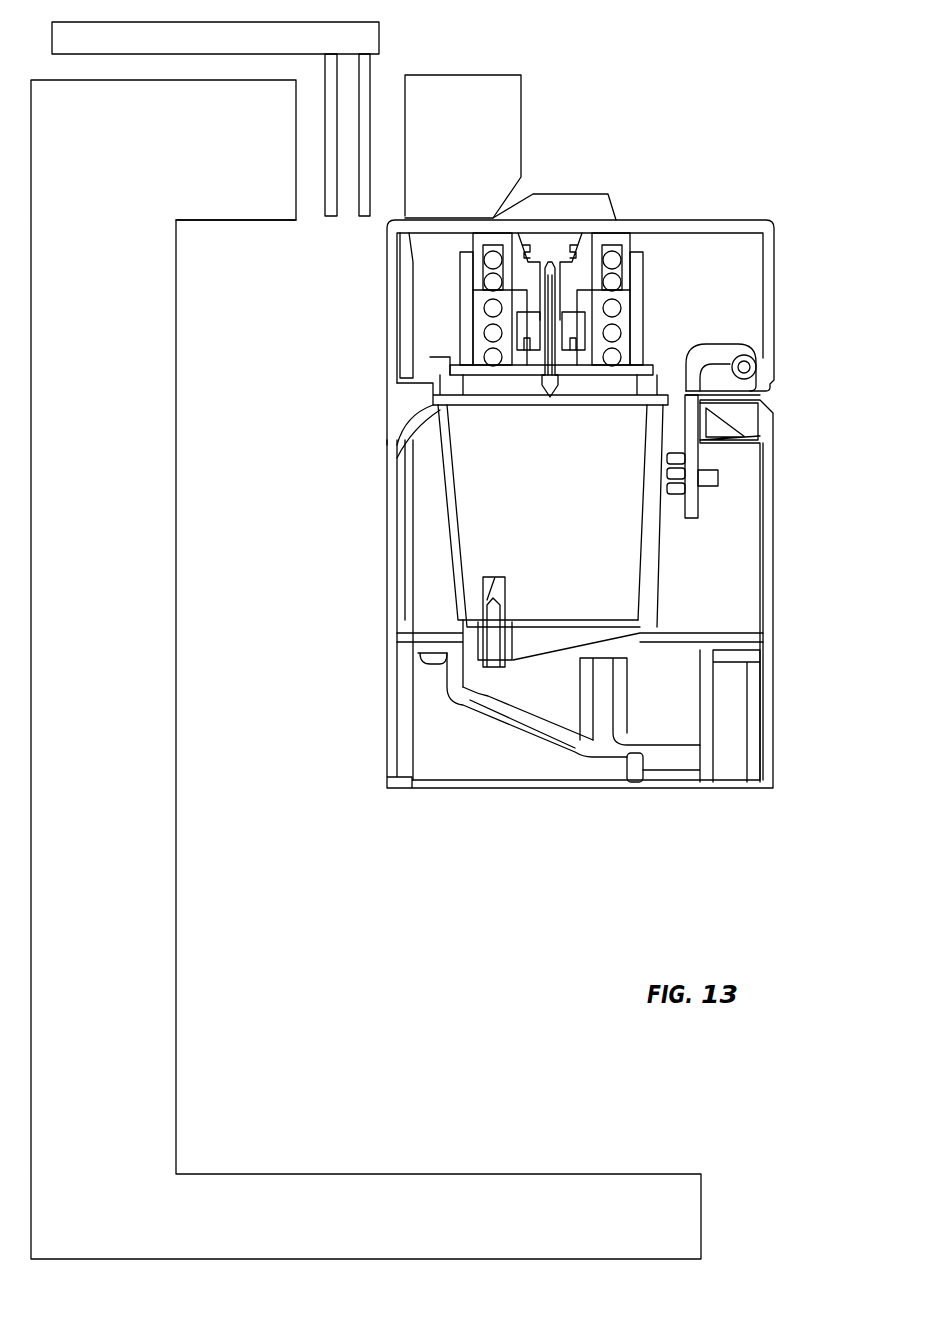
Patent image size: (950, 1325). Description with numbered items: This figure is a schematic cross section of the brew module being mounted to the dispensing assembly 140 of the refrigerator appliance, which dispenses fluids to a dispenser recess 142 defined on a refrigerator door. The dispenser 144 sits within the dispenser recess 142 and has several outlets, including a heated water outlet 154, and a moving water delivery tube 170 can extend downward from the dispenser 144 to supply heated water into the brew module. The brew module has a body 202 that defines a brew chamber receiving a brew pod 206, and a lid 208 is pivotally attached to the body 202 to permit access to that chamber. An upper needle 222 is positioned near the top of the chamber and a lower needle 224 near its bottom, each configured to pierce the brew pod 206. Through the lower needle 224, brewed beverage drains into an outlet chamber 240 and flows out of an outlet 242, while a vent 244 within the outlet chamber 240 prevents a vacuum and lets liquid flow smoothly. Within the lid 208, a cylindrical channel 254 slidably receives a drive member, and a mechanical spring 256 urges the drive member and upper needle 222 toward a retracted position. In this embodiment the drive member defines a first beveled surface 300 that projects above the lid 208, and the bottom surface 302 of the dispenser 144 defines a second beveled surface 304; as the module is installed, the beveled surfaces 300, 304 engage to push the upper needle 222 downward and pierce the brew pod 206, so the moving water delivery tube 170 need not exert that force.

The dispensing assembly 140 is at (700, 52).
The dispenser recess 142 is at (396, 640).
The dispenser 144 is at (458, 96).
The heated water outlet 154 is at (335, 232).
The moving water delivery tube 170 is at (325, 152).
The body 202 is at (604, 610).
The brew pod 206 is at (565, 517).
The lid 208 is at (767, 232).
The upper needle 222 is at (540, 345).
The lower needle 224 is at (482, 595).
The outlet chamber 240 is at (536, 690).
The outlet 242 is at (665, 800).
The vent 244 is at (608, 670).
The cylindrical channel 254 is at (641, 276).
The mechanical spring 256 is at (621, 308).
The first beveled surface 300 is at (484, 205).
The bottom surface 302 is at (243, 234).
The second beveled surface 304 is at (524, 191).